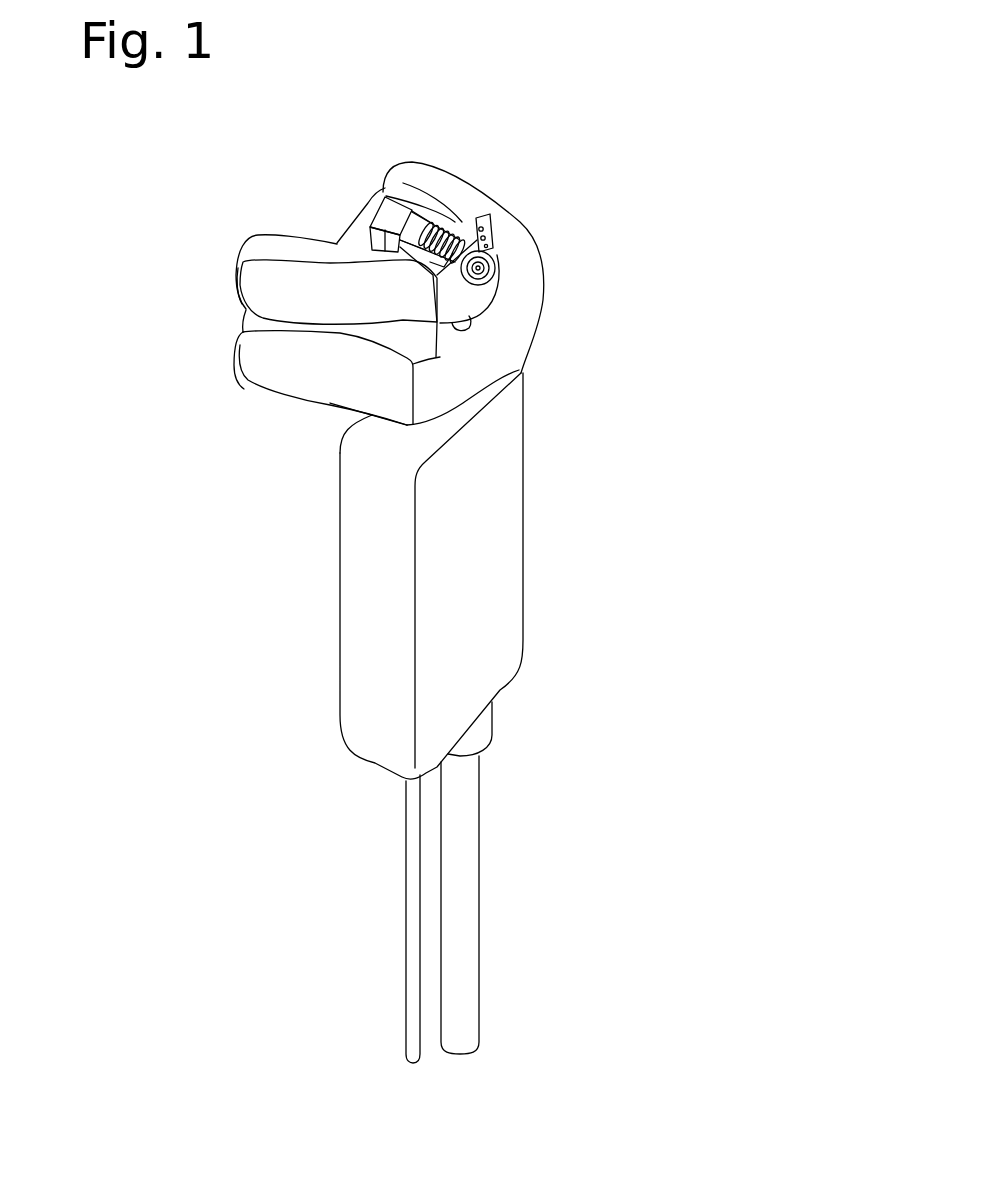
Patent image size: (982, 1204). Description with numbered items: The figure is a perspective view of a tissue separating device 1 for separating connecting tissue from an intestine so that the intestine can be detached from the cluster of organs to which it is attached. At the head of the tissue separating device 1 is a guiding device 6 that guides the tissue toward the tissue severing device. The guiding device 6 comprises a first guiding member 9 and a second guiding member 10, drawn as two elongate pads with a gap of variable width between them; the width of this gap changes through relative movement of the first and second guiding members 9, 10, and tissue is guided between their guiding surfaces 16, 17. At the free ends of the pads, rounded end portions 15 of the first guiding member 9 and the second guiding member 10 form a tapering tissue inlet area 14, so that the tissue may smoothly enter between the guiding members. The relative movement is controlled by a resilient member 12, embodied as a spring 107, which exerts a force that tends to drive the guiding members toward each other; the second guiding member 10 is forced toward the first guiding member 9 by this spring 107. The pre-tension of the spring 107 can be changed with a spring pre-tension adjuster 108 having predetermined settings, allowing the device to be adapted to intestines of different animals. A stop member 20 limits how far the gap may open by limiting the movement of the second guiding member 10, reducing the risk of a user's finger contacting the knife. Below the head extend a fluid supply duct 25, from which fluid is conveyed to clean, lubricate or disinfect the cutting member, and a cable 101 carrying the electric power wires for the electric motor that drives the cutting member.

The tissue separating device 1 is at (413, 113).
The guiding device 6 is at (188, 296).
The first guiding member 9 is at (270, 378).
The second guiding member 10 is at (323, 285).
The resilient member 12 is at (448, 228).
The tapering tissue inlet area 14 is at (241, 308).
The rounded end portions 15 is at (240, 298).
The guiding surface 16 is at (255, 358).
The guiding surface 17 is at (293, 295).
The stop member 20 is at (380, 223).
The fluid supply duct 25 is at (405, 831).
The cable 101 is at (466, 818).
The spring 107 is at (435, 226).
The spring pre-tension adjuster 108 is at (493, 234).